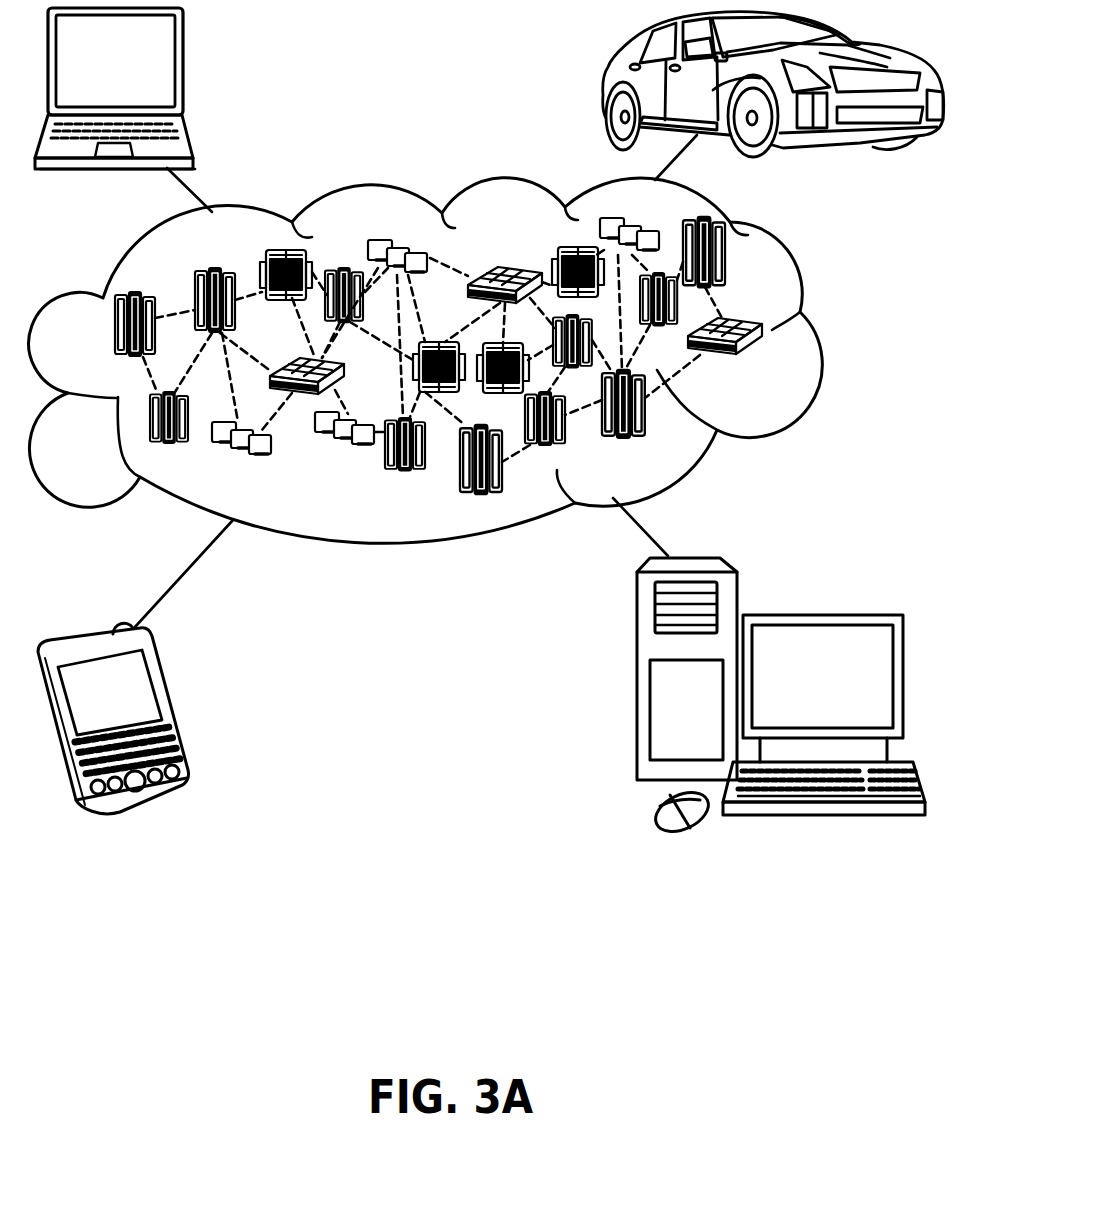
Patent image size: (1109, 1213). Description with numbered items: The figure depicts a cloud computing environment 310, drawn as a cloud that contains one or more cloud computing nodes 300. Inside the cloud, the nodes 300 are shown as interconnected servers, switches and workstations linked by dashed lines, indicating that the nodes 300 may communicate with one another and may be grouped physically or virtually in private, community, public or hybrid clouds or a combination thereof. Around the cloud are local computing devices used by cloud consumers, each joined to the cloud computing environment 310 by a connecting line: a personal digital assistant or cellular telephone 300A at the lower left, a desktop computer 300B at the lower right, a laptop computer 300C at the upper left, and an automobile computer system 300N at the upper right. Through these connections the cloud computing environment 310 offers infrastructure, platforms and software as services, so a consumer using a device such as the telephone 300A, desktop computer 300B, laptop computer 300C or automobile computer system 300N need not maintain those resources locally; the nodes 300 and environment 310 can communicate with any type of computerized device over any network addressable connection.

The cloud computing nodes 300 is at (774, 366).
The cloud computing environment 310 is at (824, 337).
The personal digital assistant (PDA) or cellular telephone 300A is at (173, 708).
The desktop computer 300B is at (820, 613).
The laptop computer 300C is at (184, 70).
The automobile computer system 300N is at (603, 83).